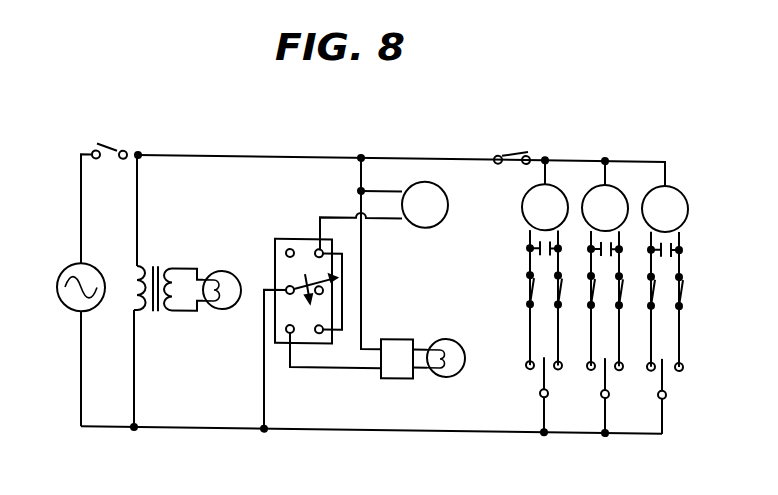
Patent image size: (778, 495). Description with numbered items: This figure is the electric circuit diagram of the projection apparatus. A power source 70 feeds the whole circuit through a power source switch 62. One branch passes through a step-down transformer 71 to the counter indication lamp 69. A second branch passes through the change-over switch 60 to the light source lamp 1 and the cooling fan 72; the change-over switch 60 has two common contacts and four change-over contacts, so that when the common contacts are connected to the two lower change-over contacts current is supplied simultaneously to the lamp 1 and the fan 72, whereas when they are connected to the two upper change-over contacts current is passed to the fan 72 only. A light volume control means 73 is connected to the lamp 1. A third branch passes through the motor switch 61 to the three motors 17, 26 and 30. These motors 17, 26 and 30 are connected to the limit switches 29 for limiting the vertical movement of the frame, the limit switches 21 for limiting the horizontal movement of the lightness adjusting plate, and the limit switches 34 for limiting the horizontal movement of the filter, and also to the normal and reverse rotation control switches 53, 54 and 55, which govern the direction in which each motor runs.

The light source lamp 1 is at (447, 373).
The motor 17 is at (550, 187).
The limit switches 21 is at (547, 293).
The motor 26 is at (610, 187).
The limit switches 29 is at (605, 297).
The motor 30 is at (675, 195).
The limit switches 34 is at (663, 300).
The normal and reverse rotation control switch 53 is at (548, 375).
The normal and reverse rotation control switch 54 is at (608, 370).
The normal and reverse rotation control switch 55 is at (668, 361).
The change-over switch 60 is at (300, 237).
The motor switch 61 is at (503, 148).
The power source switch 62 is at (113, 146).
The counter indication lamp 69 is at (222, 308).
The power source 70 is at (70, 312).
The step-down transformer 71 is at (157, 257).
The cooling fan 72 is at (427, 181).
The light volume control means 73 is at (398, 375).